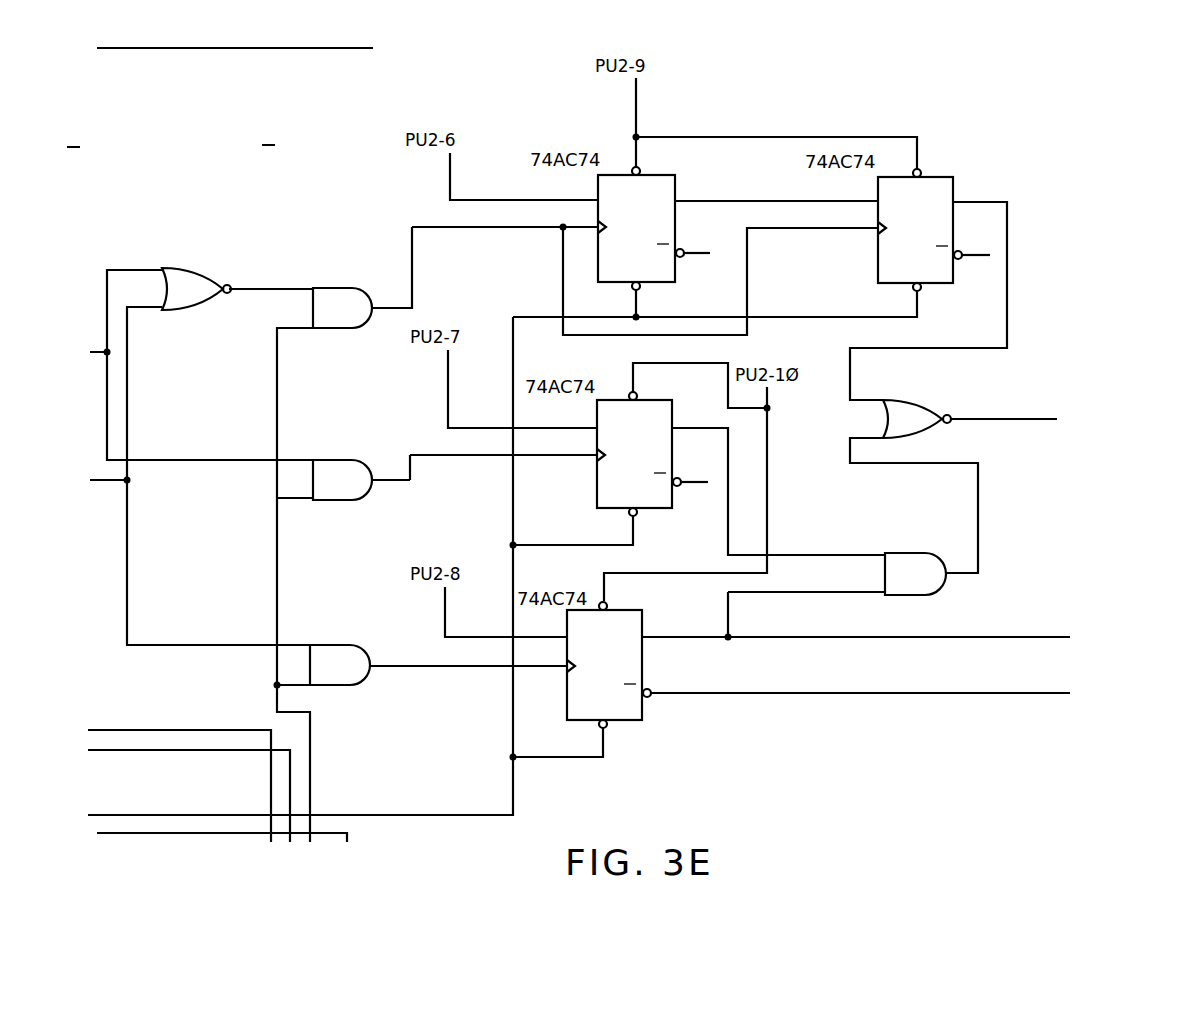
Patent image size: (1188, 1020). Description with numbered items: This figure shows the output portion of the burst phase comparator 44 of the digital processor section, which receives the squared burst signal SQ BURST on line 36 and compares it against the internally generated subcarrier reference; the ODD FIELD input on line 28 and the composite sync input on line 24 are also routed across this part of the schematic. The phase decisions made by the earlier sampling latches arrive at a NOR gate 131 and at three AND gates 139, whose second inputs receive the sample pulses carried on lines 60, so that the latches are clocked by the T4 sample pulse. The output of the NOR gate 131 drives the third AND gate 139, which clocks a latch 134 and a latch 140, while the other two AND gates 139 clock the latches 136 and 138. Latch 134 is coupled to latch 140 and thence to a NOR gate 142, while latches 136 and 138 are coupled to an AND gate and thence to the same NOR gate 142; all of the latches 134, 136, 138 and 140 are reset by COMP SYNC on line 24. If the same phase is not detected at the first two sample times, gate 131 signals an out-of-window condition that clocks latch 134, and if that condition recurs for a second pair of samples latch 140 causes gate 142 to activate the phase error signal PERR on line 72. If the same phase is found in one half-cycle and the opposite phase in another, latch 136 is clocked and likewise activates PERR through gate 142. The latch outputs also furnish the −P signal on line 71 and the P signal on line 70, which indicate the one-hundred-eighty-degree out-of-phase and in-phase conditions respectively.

The ODD FIELD line 28 is at (258, 46).
The burst phase comparator 44 is at (388, 193).
The NOR gate 131 is at (200, 283).
The latch 134 is at (675, 180).
The latch 136 is at (650, 500).
The latch 138 is at (635, 705).
The AND gates 139 is at (355, 475).
The latch 140 is at (953, 181).
The NOR gate 142 is at (935, 410).
The line 72 is at (1057, 419).
The line 71 is at (1000, 637).
The line 70 is at (1017, 670).
The lines 60 is at (310, 767).
The COMP SYNC line 24 is at (233, 812).
The SQ BURST line 36 is at (245, 833).